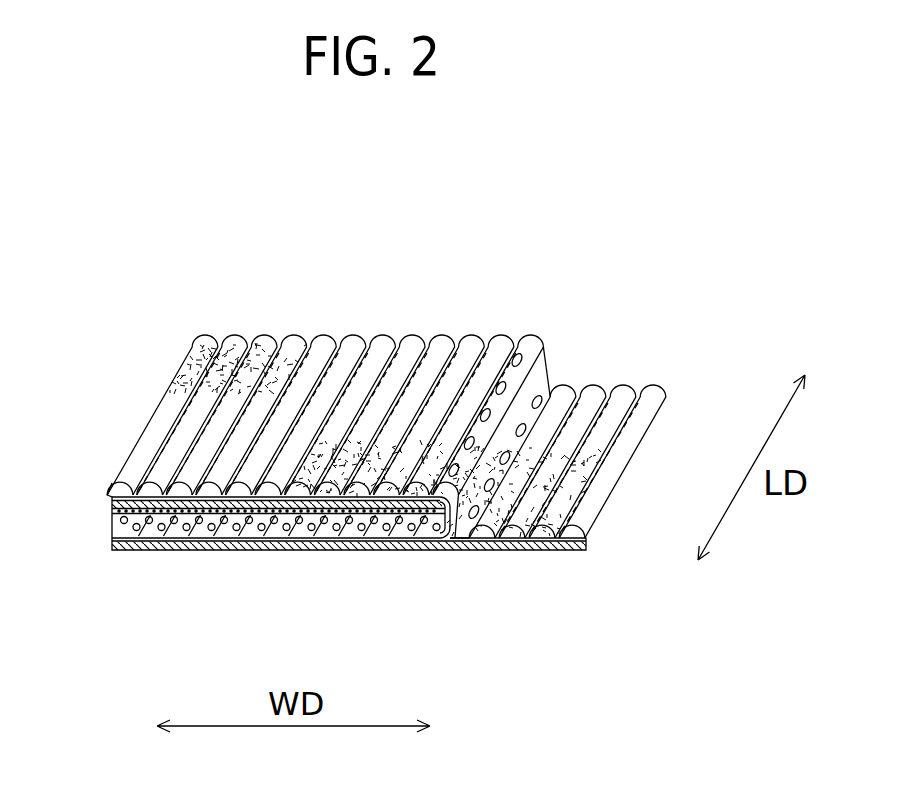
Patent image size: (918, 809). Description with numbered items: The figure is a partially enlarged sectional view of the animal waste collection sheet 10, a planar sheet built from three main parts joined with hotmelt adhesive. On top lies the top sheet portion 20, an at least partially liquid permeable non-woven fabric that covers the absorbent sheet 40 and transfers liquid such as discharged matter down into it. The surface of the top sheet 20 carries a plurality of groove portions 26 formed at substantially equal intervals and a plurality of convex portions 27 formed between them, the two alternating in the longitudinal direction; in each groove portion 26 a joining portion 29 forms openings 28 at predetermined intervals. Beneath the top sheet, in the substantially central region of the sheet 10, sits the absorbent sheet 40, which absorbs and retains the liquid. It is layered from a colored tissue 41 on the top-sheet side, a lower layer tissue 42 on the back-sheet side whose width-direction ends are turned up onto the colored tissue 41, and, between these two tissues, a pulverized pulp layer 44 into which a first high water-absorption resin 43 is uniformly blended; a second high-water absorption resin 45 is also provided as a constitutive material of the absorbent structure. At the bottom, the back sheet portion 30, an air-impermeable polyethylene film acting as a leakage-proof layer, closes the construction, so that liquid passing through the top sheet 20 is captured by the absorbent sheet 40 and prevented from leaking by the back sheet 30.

The animal waste collection sheet 10 is at (207, 272).
The top sheet portion 20 is at (607, 510).
The groove portions 26 is at (498, 550).
The convex portions 27 is at (477, 550).
The openings 28 is at (153, 437).
The joining portion 29 is at (147, 450).
The back sheet portion 30 is at (577, 551).
The absorbent sheet 40 is at (190, 547).
The colored tissue 41 is at (113, 500).
The lower layer tissue 42 is at (120, 553).
The first high water-absorption resin 43 is at (115, 532).
The pulverized pulp layer 44 is at (157, 537).
The second high-water absorption resin 45 is at (113, 508).